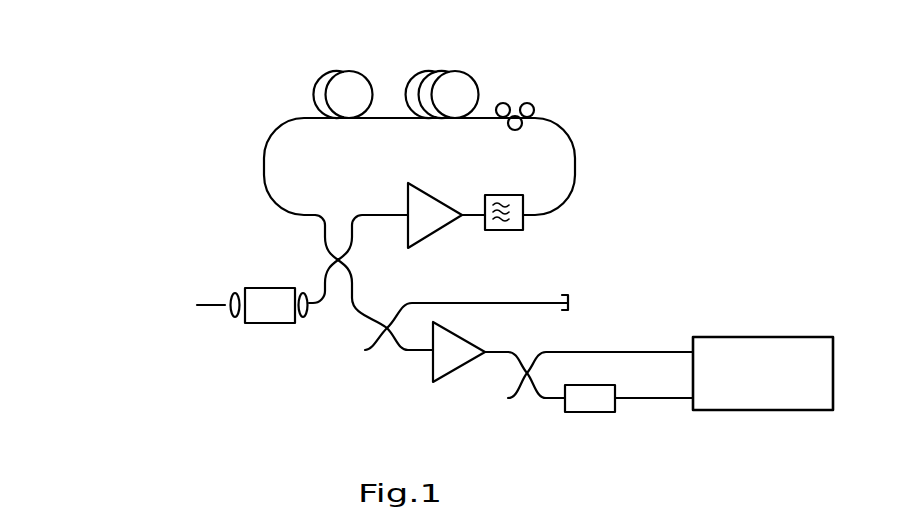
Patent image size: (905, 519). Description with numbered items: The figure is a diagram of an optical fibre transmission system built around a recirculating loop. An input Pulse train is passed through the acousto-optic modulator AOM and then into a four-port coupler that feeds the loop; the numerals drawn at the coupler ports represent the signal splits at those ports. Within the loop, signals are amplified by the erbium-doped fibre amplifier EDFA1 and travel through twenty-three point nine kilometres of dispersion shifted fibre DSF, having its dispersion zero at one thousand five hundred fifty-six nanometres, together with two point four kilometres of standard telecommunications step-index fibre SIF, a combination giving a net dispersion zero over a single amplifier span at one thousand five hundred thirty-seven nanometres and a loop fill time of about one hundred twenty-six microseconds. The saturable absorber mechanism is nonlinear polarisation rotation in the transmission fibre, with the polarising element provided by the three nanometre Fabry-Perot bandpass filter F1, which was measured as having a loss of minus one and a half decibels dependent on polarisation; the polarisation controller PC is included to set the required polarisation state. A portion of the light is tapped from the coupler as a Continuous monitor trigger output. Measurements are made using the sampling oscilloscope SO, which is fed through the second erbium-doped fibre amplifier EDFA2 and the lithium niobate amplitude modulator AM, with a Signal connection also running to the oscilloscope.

The standard telecommunications step-index fibre SIF is at (345, 60).
The dispersion shifted fibre DSF is at (450, 60).
The polarisation controller PC is at (515, 100).
The erbium-doped fibre amplifier EDFA1 is at (446, 231).
The Fabry-Perot bandpass filter F1 is at (504, 201).
The pulse train input Pulse is at (166, 311).
The acousto-optic modulator AOM is at (269, 324).
The continuous monitor trigger output Continuous is at (691, 304).
The second erbium-doped fibre amplifier EDFA2 is at (458, 369).
The lithium niobate amplitude modulator AM is at (590, 412).
The signal line to sampling oscilloscope Signal is at (655, 398).
The sampling oscilloscope SO is at (763, 373).